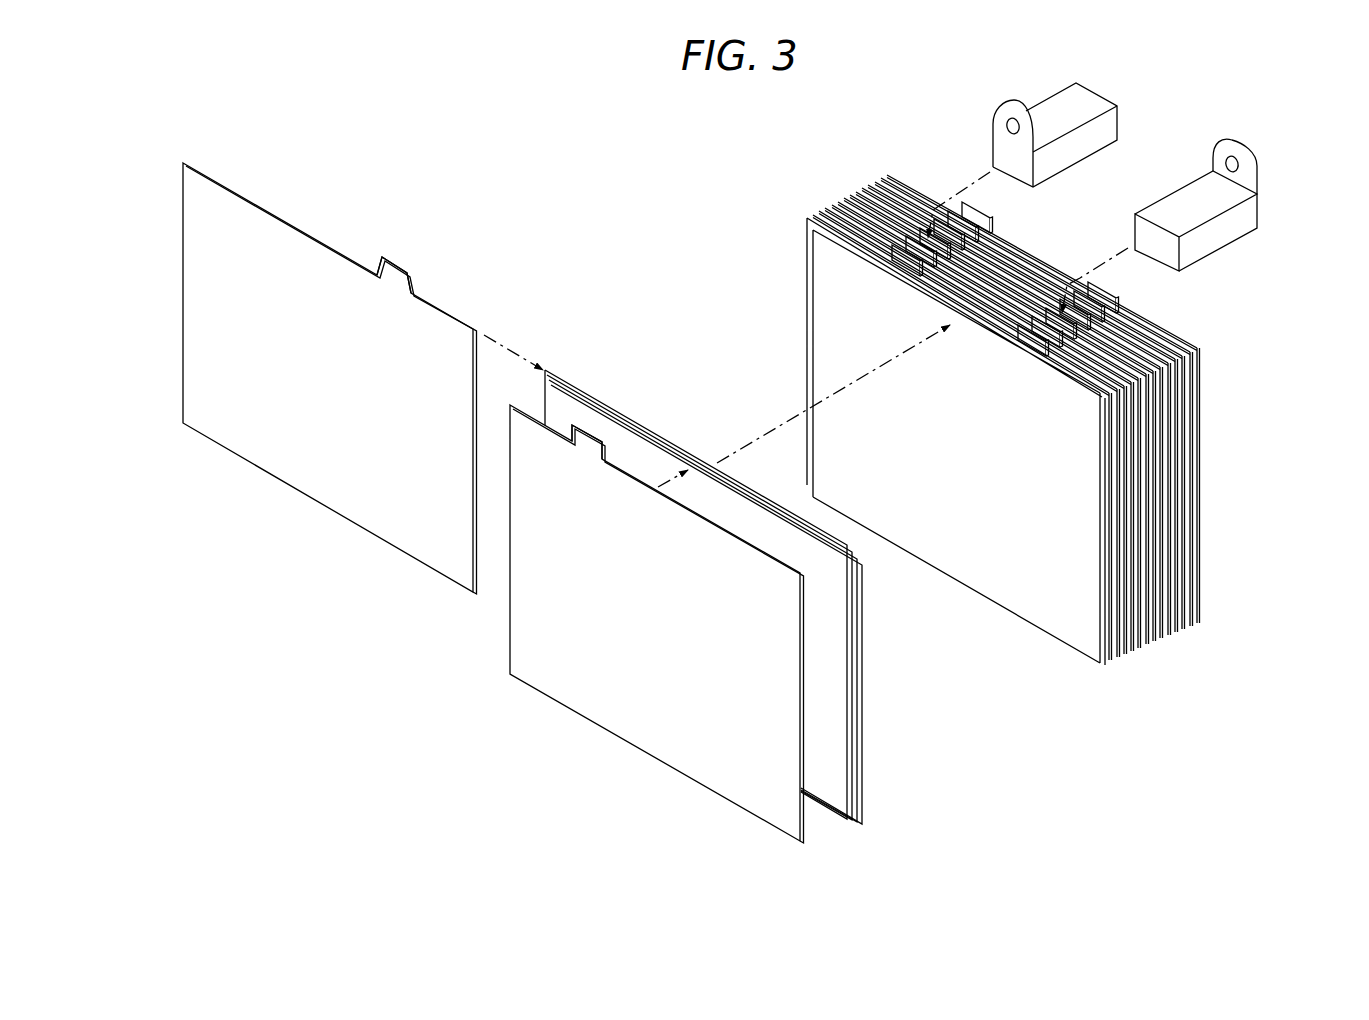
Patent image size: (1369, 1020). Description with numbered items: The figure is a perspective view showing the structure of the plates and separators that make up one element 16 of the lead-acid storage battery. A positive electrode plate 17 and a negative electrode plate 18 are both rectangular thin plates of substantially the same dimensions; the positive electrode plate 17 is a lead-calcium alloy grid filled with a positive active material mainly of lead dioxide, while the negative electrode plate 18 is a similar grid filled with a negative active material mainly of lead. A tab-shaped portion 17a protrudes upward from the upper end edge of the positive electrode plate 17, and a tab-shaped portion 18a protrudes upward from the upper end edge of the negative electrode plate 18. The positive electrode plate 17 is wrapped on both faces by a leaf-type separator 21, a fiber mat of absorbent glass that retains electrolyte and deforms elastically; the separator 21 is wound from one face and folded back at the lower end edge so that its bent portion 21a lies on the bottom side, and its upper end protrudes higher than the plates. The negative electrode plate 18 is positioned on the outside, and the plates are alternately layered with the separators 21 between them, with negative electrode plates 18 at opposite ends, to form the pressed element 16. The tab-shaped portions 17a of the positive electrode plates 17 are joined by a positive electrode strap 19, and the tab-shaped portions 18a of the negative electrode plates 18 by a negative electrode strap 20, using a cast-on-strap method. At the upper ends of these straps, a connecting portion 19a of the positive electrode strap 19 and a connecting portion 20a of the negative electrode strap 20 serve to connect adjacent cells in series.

The element 16 is at (842, 180).
The positive electrode plate 17 is at (285, 482).
The tab-shaped portion 17a is at (393, 273).
The negative electrode plate 18 is at (610, 734).
The tab-shaped portion 18a is at (586, 440).
The positive electrode strap 19 is at (1261, 225).
The connecting portion 19a is at (1250, 162).
The negative electrode strap 20 is at (1119, 122).
The connecting portion 20a is at (993, 113).
The separator 21 is at (1157, 641).
The bent portion 21a is at (863, 821).